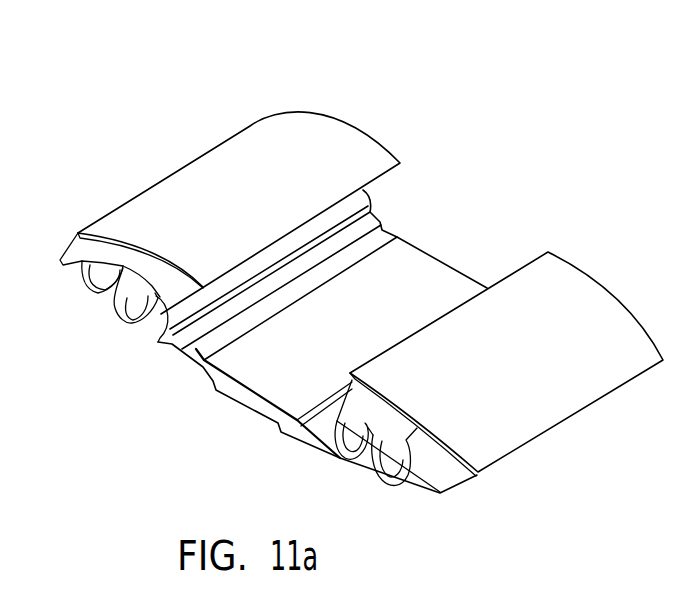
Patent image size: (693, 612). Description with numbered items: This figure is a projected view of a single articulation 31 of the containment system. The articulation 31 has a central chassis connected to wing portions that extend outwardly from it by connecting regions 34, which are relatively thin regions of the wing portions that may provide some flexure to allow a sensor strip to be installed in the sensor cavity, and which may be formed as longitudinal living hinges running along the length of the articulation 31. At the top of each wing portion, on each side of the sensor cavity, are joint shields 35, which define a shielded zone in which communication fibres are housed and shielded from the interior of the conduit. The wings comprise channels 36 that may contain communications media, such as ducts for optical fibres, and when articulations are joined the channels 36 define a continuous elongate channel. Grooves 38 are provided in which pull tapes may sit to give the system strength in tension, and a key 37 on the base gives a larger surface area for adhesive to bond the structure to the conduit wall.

The articulation 31 is at (152, 134).
The connecting regions 34 is at (177, 307).
The joint shields 35 is at (343, 140).
The channels 36 is at (113, 293).
The key 37 is at (372, 468).
The grooves 38 is at (203, 354).